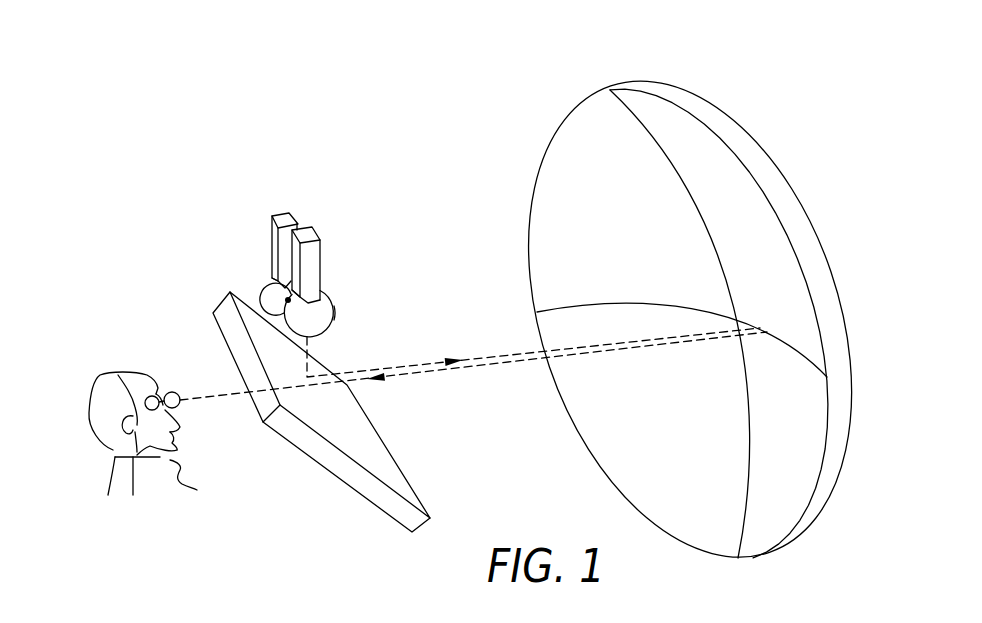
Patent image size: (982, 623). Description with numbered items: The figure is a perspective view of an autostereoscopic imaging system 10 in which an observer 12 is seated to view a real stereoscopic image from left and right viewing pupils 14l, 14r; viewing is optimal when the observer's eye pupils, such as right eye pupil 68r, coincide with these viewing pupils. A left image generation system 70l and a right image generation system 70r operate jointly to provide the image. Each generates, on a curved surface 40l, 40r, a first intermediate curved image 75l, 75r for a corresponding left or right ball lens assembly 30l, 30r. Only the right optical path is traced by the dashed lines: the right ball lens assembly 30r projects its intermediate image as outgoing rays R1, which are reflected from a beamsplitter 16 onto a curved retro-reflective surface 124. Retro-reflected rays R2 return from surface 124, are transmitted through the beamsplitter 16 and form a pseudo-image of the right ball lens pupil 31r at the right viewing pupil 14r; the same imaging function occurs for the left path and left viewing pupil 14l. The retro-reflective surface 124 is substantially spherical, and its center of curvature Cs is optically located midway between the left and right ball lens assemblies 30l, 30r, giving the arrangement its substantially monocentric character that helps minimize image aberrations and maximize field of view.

The autostereoscopic imaging system 10 is at (252, 64).
The curved retro-reflective surface 124 is at (737, 127).
The left curved surface 40l is at (288, 204).
The left first intermediate curved image 75l is at (288, 204).
The left image generation system 70l is at (328, 179).
The right image generation system 70r is at (313, 227).
The right curved surface 40r is at (386, 239).
The right first intermediate curved image 75r is at (386, 239).
The left ball lens assembly 30l is at (261, 295).
The right ball lens assembly 30r is at (360, 314).
The right ball lens pupil 31r is at (336, 312).
The center of curvature of retro-reflective surface Cs is at (286, 299).
The outgoing rays R1 is at (487, 357).
The retro-reflected rays R2 is at (407, 381).
The beamsplitter 16 is at (343, 472).
The observer 12 is at (143, 410).
The left viewing pupil 14l is at (172, 392).
The right viewing pupil 14r is at (180, 442).
The right eye pupil 68r is at (134, 489).